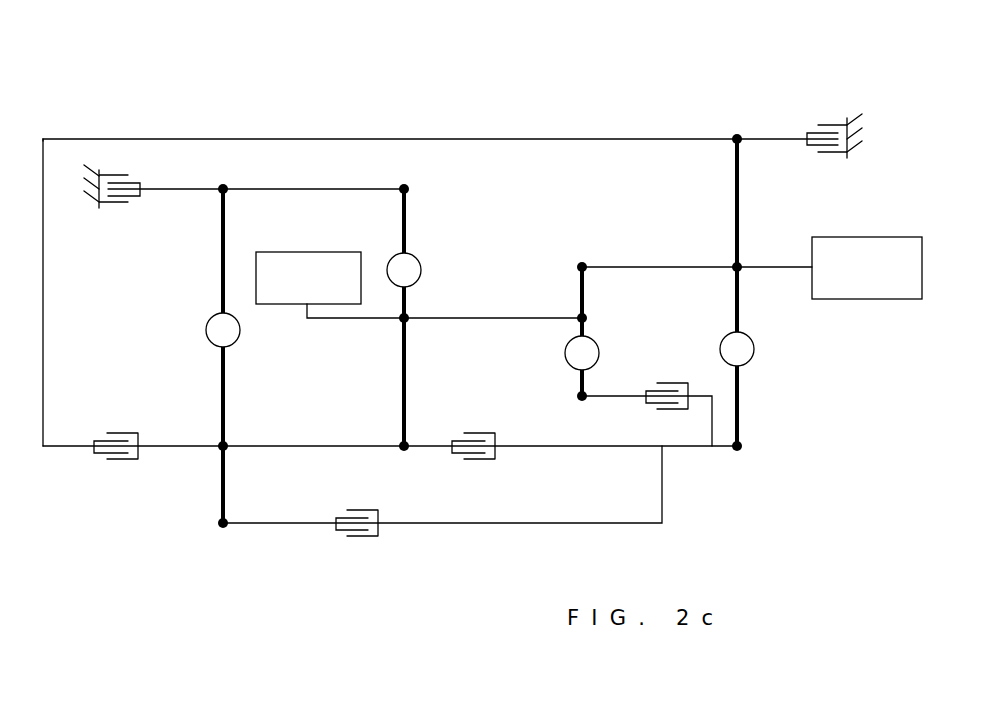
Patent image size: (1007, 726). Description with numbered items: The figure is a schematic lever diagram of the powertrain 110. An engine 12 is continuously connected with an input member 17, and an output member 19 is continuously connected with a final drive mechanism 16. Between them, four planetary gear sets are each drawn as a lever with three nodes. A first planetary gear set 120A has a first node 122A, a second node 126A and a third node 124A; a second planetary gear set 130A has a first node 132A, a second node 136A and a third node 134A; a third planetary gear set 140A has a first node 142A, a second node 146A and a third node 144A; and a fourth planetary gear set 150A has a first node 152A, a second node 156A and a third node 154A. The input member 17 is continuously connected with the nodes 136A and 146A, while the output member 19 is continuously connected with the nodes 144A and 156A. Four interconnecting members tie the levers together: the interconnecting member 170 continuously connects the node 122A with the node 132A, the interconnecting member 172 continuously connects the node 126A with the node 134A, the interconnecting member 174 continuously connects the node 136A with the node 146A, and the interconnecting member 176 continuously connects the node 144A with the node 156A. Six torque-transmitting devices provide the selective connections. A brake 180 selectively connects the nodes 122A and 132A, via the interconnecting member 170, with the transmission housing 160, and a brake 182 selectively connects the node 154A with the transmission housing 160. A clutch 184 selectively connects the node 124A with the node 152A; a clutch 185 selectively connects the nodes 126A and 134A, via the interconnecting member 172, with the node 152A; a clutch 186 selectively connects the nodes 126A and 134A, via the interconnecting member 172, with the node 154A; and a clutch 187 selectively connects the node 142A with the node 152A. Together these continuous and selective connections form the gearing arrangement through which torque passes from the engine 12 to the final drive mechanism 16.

The powertrain 110 is at (366, 79).
The engine 12 is at (313, 243).
The final drive mechanism 16 is at (868, 230).
The input member 17 is at (323, 321).
The output member 19 is at (783, 272).
The first planetary gear set 120A is at (225, 538).
The first node 122A is at (222, 195).
The third node 124A is at (221, 522).
The second node 126A is at (221, 451).
The second planetary gear set 130A is at (406, 458).
The first node 132A is at (410, 186).
The third node 134A is at (410, 443).
The second node 136A is at (410, 316).
The third planetary gear set 140A is at (583, 408).
The first node 142A is at (578, 393).
The third node 144A is at (580, 263).
The second node 146A is at (586, 316).
The fourth planetary gear set 150A is at (742, 459).
The first node 152A is at (744, 446).
The third node 154A is at (733, 144).
The second node 156A is at (733, 272).
The transmission housing 160 is at (86, 206).
The interconnecting member 170 is at (310, 187).
The interconnecting member 172 is at (328, 444).
The interconnecting member 174 is at (545, 316).
The interconnecting member 176 is at (701, 264).
The brake 180 is at (141, 172).
The brake 182 is at (846, 114).
The clutch 184 is at (351, 548).
The clutch 185 is at (493, 467).
The clutch 186 is at (97, 426).
The clutch 187 is at (690, 378).